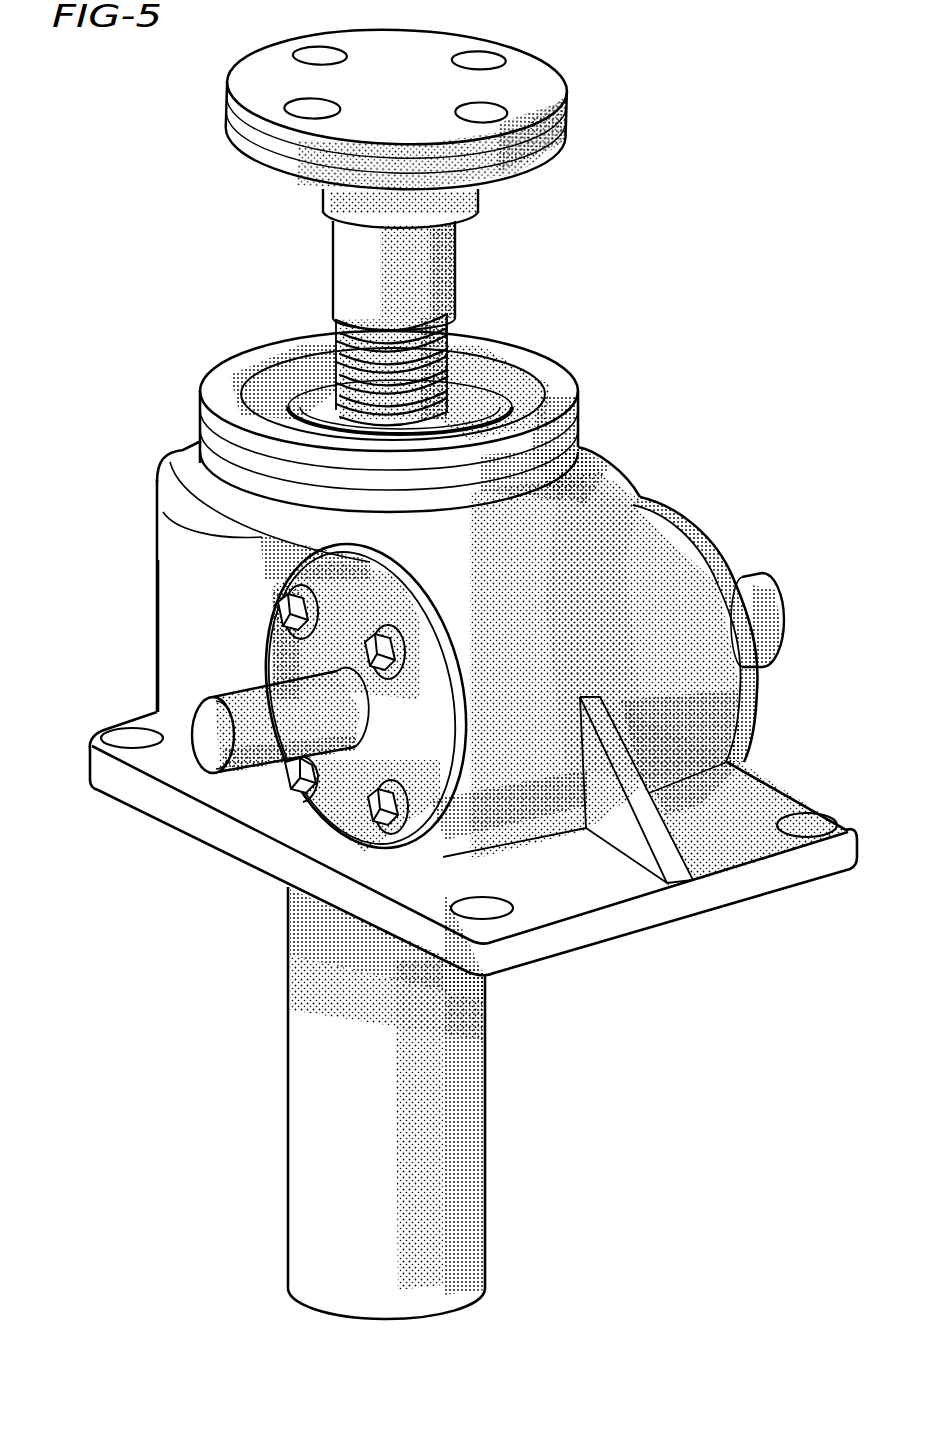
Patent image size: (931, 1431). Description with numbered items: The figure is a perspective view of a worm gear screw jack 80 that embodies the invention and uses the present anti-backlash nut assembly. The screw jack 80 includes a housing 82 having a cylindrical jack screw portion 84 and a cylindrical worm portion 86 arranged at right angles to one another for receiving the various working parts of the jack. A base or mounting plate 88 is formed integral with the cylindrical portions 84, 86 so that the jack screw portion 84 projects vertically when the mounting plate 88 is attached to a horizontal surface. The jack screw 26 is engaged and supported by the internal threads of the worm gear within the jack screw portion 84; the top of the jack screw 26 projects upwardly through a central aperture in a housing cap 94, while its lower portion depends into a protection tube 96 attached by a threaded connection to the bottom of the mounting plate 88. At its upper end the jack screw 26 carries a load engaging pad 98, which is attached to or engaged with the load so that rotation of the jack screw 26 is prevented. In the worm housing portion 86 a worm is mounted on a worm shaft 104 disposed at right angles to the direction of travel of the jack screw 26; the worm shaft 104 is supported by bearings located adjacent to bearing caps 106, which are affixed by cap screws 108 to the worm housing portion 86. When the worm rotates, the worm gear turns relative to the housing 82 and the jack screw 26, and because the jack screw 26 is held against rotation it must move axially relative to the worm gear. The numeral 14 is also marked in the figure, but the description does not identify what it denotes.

The worm gear screw jack 80 is at (640, 355).
The housing 82 is at (176, 550).
The cylindrical jack screw portion 84 is at (176, 594).
The load engaging pad 98 is at (522, 186).
The jack screw 26 is at (331, 330).
The housing cap 94 is at (563, 392).
The screw nut bore 14 is at (472, 400).
The cylindrical worm portion 86 is at (678, 555).
The worm shaft 104 is at (766, 602).
The bearing caps 106 is at (427, 683).
The cap screws 108 is at (368, 632).
The base or mounting plate 88 is at (236, 800).
The protection tube 96 is at (312, 1084).